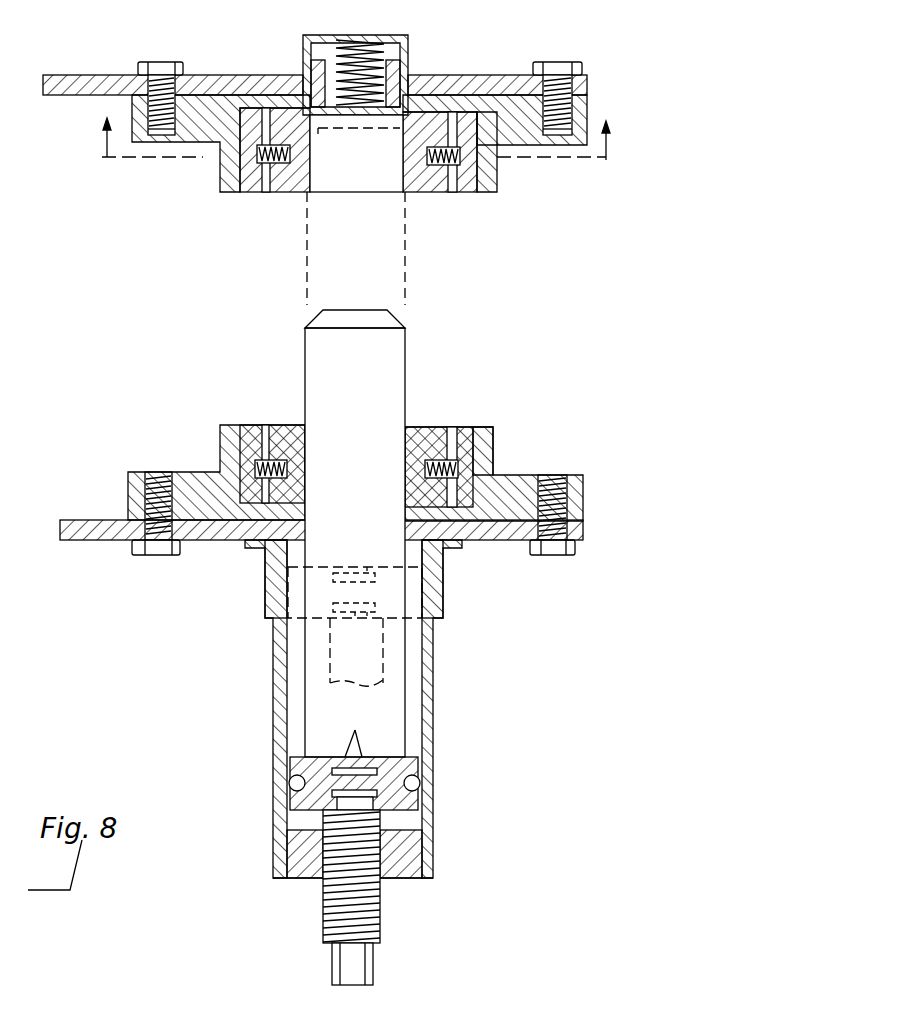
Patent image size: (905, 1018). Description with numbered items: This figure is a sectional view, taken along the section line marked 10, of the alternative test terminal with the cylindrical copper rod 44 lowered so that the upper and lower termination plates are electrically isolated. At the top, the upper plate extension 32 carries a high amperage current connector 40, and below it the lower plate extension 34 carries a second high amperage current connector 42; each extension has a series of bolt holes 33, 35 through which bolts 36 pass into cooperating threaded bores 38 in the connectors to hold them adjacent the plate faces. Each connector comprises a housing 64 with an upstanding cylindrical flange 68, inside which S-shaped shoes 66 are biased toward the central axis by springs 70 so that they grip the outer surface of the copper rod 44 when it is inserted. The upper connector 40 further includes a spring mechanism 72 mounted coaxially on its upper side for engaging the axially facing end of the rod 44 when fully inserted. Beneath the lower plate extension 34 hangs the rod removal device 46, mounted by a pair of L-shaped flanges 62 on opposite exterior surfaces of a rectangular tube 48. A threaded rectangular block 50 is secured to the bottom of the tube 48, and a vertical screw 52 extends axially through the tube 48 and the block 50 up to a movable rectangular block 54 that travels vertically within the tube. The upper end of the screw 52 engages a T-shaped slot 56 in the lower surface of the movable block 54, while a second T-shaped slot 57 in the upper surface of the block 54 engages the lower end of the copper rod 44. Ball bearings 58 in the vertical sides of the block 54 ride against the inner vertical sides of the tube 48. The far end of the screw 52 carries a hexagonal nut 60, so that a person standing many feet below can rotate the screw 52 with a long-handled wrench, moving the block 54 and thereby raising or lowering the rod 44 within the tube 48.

The test terminal 10 is at (353, 139).
The upper plate extension 32 is at (490, 72).
The bolt holes 33 is at (175, 66).
The lower plate extension 34 is at (520, 540).
The bolt holes 35 is at (150, 527).
The bolts 36 is at (158, 62).
The threaded bores 38 is at (150, 104).
The high amperage current connector 40 is at (213, 183).
The high amperage current connector 42 is at (216, 438).
The cylindrical copper rod 44 is at (405, 376).
The rod removal device 46 is at (438, 688).
The rectangular tube 48 is at (274, 683).
The threaded rectangular block 50 is at (300, 872).
The vertical screw 52 is at (330, 900).
The movable rectangular block 54 is at (290, 810).
The T-shaped slot 56 is at (378, 792).
The second T-shaped slot 57 is at (355, 731).
The ball bearings 58 is at (290, 786).
The hexagonal nut 60 is at (333, 970).
The L-shaped flanges 62 is at (272, 595).
The housing 64 is at (528, 140).
The S-shaped shoes 66 is at (436, 192).
The cylindrical flange 68 is at (488, 192).
The springs 70 is at (262, 165).
The spring mechanism 72 is at (385, 52).